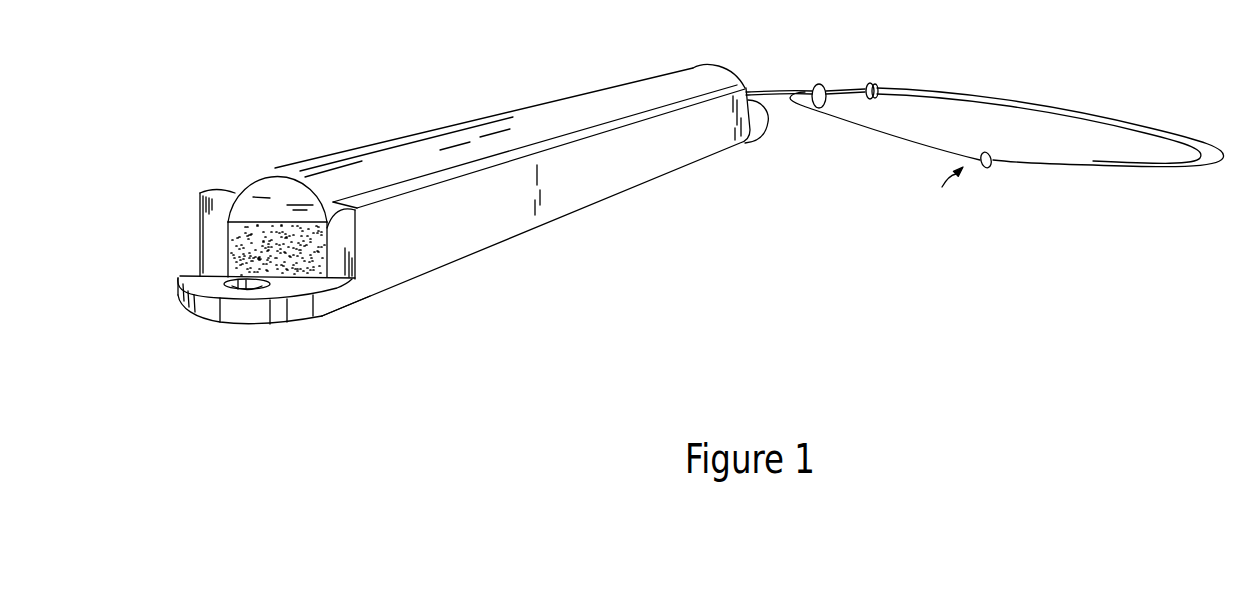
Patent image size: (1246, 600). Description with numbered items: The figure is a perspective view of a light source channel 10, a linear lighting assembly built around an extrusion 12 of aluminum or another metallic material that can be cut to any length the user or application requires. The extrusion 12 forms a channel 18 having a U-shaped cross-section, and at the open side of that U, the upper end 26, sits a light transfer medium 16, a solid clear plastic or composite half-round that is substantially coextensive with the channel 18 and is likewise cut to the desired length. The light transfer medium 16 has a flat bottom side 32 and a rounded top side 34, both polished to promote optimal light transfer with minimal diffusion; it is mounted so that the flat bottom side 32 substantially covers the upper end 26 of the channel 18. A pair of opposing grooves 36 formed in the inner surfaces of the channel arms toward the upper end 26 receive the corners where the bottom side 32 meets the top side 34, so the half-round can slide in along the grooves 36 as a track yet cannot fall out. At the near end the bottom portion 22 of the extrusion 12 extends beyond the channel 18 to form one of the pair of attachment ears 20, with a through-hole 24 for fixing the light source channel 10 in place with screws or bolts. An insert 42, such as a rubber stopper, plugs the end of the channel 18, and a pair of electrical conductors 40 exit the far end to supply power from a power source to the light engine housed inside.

The light source channel 10 is at (405, 412).
The extrusion 12 is at (550, 223).
The light transfer medium 16 is at (553, 103).
The channel 18 is at (307, 282).
The attachment ears 20 is at (222, 323).
The bottom portion 22 is at (375, 305).
The through-hole 24 is at (268, 287).
The upper end 26 is at (228, 185).
The flat bottom side 32 is at (267, 222).
The rounded top side 34 is at (312, 172).
The opposing grooves 36 is at (208, 212).
The electrical conductors 40 is at (820, 84).
The inserts 42 is at (250, 255).